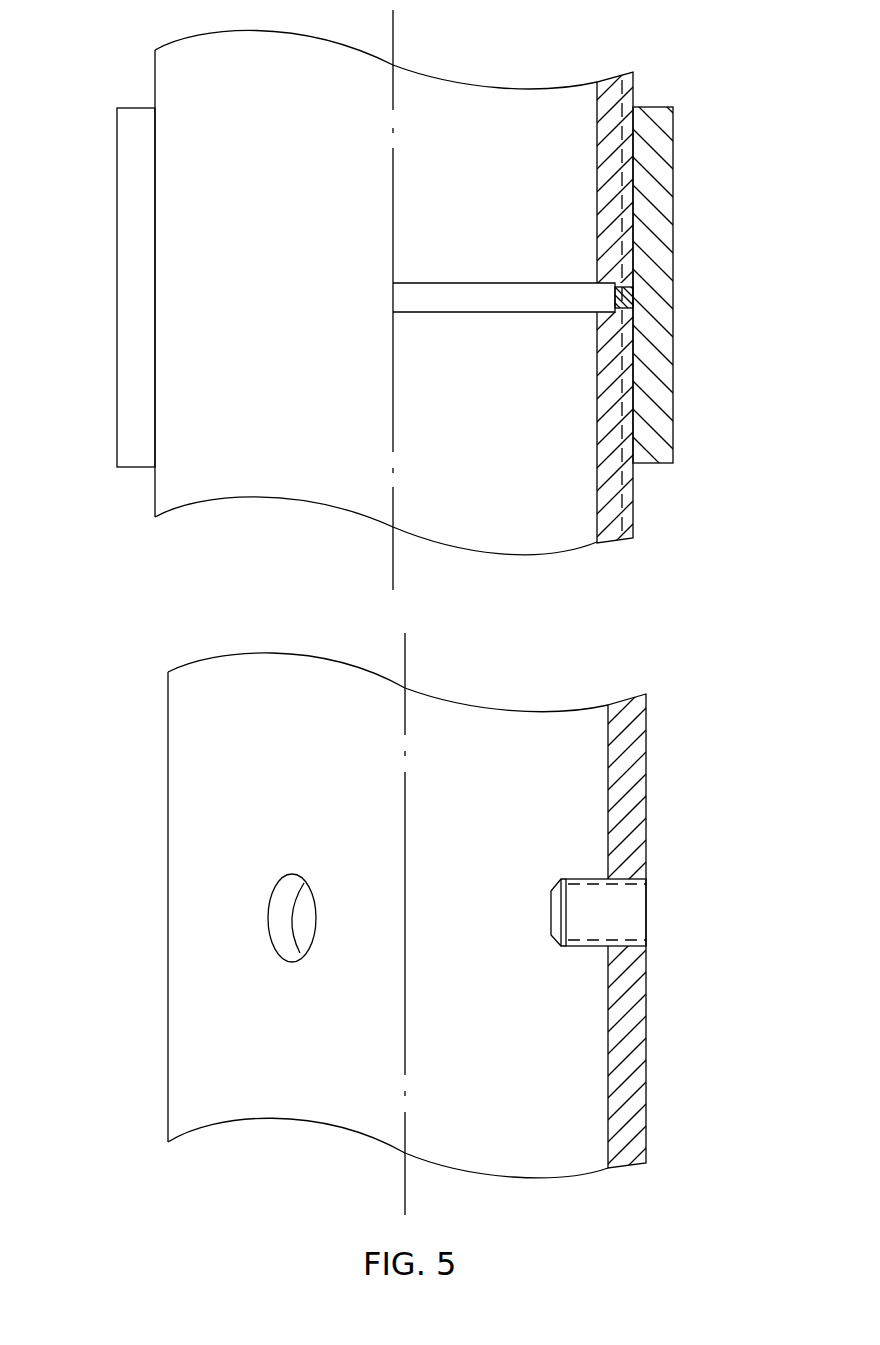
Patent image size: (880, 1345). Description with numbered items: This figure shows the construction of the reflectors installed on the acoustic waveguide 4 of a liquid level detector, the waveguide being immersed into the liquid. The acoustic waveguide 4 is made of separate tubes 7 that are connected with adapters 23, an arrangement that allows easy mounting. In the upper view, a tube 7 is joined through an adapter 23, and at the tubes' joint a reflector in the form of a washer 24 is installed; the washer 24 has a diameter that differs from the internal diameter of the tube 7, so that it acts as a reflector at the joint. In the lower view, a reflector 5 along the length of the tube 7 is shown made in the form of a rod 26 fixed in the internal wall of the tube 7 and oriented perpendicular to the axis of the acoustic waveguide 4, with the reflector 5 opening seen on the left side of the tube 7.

The acoustic waveguide 4 is at (362, 600).
The tube 7 is at (672, 605).
The adapter 23 is at (700, 275).
The washer 24 is at (580, 265).
The reflector 5 is at (417, 868).
The rod 26 is at (408, 869).